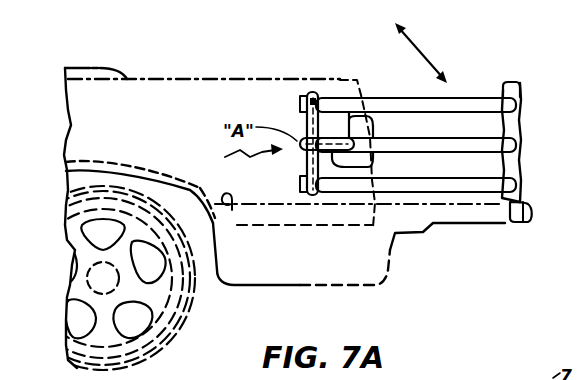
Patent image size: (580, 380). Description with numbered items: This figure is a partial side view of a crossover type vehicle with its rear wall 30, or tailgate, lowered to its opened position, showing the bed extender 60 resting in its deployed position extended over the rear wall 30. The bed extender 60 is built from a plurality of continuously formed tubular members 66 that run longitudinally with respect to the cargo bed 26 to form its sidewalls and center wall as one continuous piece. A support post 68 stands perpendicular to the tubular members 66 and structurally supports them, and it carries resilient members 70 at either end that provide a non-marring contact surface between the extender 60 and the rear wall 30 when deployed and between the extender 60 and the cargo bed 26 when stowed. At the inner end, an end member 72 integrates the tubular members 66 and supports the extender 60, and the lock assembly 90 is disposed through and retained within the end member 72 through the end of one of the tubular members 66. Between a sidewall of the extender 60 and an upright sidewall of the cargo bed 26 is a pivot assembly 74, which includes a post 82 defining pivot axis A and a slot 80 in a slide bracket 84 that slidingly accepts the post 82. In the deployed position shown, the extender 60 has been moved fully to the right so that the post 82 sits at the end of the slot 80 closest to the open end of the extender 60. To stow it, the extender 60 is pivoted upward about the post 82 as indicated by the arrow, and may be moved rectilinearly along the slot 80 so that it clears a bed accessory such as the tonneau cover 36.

The cargo bed 26 is at (233, 212).
The rear wall 30 is at (487, 227).
The tonneau cover 36 is at (95, 67).
The bed extender 60 is at (430, 118).
The tubular members 66 is at (408, 93).
The support posts 68 is at (520, 124).
The resilient members 70 is at (515, 84).
The end member 72 is at (310, 165).
The pivot assembly 74 is at (241, 157).
The slot 80 is at (373, 127).
The post 82 is at (298, 141).
The slide bracket 84 is at (373, 167).
The lock assembly 90 is at (326, 78).